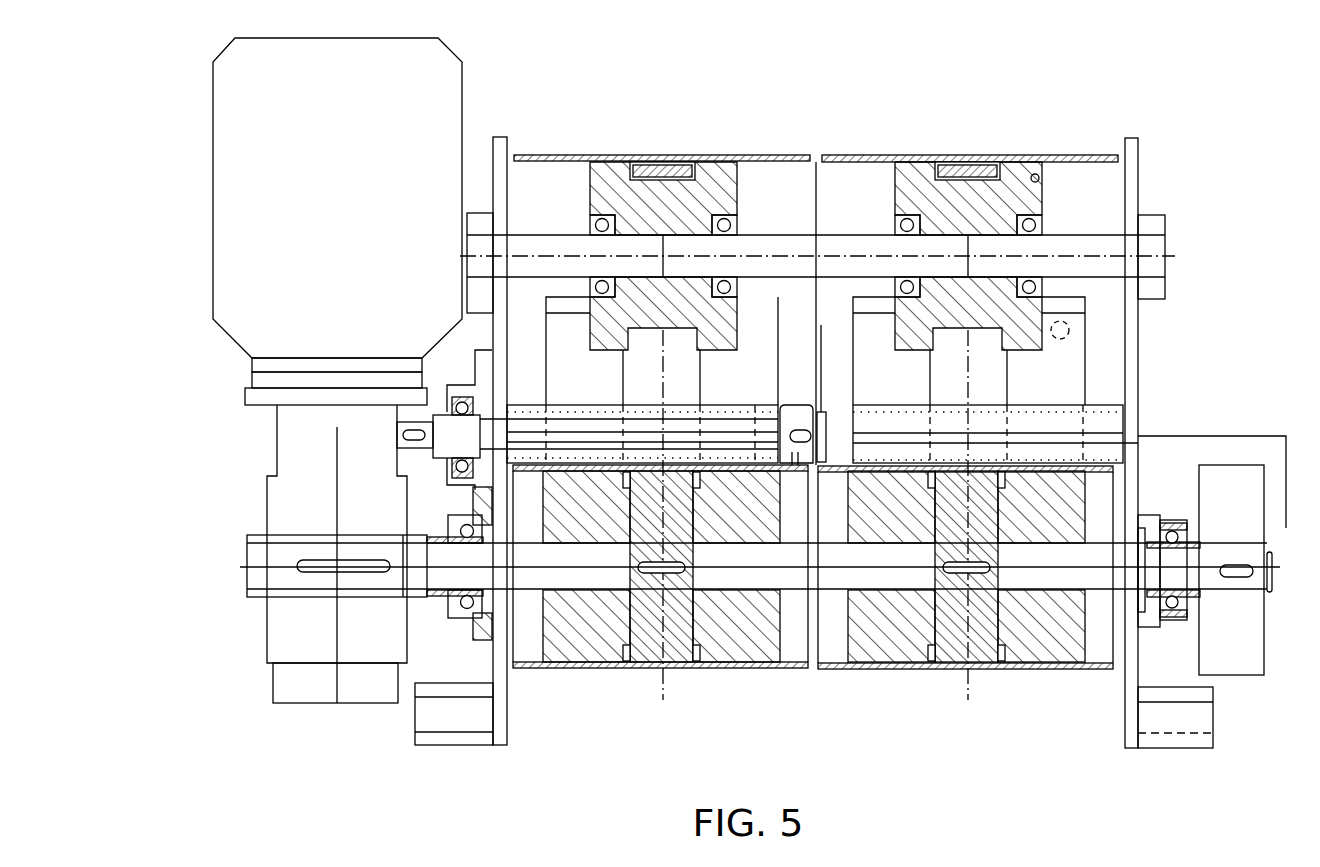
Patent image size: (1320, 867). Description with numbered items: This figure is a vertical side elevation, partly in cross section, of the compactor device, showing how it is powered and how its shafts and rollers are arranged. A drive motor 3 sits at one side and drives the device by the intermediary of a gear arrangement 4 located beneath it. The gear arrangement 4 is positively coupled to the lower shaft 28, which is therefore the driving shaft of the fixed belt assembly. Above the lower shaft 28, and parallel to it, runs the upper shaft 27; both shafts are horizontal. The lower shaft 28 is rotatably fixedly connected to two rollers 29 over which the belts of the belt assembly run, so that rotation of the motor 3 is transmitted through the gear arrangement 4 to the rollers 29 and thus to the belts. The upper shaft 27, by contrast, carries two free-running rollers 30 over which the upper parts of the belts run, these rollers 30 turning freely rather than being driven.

The drive motor 3 is at (242, 327).
The gear arrangement 4 is at (292, 618).
The upper shaft 27 is at (552, 247).
The lower shaft 28 is at (580, 578).
The rollers 29 is at (745, 628).
The free-running rollers 30 is at (612, 172).